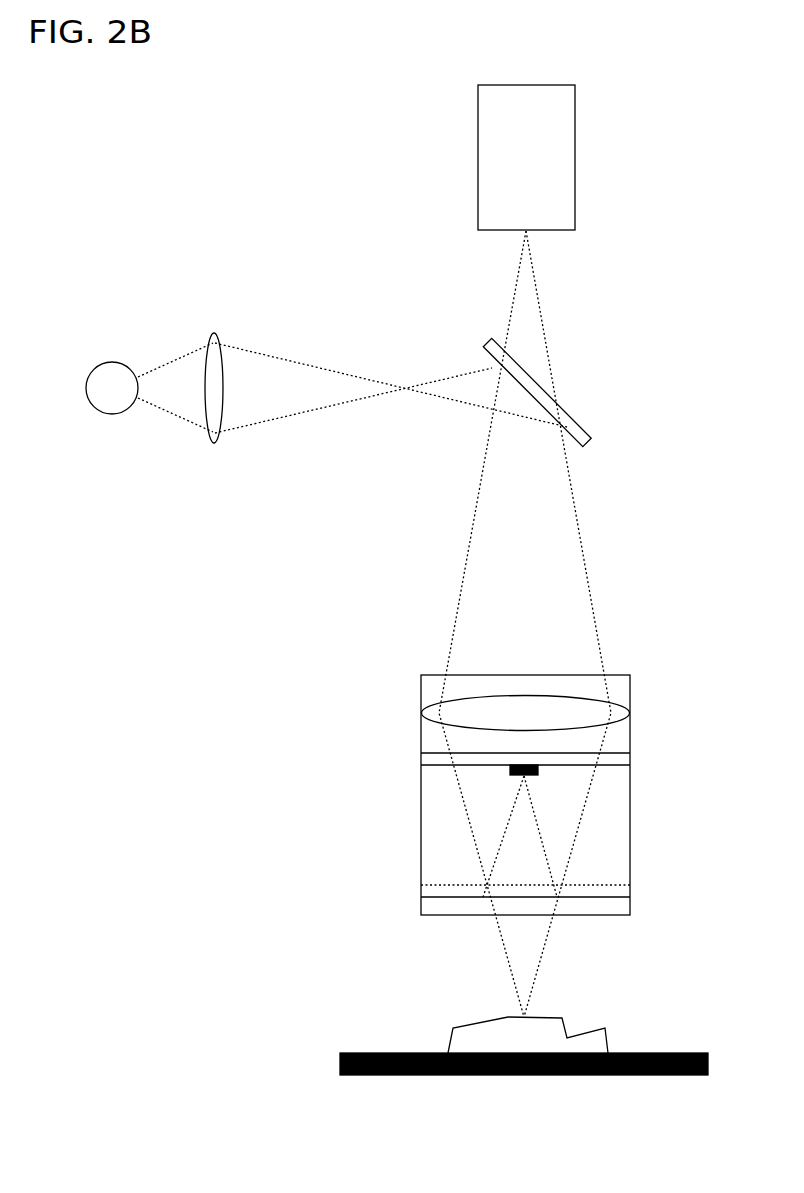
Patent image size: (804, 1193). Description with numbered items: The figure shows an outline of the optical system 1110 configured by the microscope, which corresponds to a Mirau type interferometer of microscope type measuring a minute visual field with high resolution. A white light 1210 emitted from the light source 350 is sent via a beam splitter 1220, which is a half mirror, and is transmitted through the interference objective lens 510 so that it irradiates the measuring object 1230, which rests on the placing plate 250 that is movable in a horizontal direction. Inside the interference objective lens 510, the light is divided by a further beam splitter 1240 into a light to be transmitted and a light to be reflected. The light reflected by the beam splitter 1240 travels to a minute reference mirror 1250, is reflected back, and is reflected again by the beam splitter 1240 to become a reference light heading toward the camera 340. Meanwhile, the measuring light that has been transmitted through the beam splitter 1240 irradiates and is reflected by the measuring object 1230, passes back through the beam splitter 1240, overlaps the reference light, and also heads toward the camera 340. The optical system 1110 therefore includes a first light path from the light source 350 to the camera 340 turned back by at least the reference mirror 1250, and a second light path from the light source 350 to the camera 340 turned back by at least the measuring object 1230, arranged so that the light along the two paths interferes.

The camera 340 is at (575, 157).
The optical system 1110 is at (692, 309).
The light source 350 is at (110, 415).
The white light 1210 is at (295, 400).
The beam splitter 1220 is at (580, 425).
The interference objective lens 510 is at (630, 692).
The reference mirror 1250 is at (538, 769).
The beam splitter 1240 is at (622, 890).
The measuring object 1230 is at (605, 1028).
The placing plate 250 is at (520, 1075).